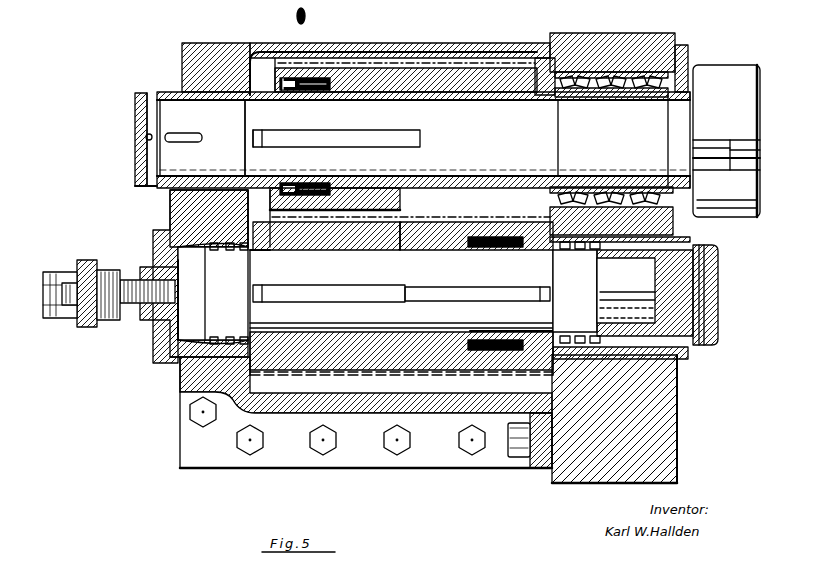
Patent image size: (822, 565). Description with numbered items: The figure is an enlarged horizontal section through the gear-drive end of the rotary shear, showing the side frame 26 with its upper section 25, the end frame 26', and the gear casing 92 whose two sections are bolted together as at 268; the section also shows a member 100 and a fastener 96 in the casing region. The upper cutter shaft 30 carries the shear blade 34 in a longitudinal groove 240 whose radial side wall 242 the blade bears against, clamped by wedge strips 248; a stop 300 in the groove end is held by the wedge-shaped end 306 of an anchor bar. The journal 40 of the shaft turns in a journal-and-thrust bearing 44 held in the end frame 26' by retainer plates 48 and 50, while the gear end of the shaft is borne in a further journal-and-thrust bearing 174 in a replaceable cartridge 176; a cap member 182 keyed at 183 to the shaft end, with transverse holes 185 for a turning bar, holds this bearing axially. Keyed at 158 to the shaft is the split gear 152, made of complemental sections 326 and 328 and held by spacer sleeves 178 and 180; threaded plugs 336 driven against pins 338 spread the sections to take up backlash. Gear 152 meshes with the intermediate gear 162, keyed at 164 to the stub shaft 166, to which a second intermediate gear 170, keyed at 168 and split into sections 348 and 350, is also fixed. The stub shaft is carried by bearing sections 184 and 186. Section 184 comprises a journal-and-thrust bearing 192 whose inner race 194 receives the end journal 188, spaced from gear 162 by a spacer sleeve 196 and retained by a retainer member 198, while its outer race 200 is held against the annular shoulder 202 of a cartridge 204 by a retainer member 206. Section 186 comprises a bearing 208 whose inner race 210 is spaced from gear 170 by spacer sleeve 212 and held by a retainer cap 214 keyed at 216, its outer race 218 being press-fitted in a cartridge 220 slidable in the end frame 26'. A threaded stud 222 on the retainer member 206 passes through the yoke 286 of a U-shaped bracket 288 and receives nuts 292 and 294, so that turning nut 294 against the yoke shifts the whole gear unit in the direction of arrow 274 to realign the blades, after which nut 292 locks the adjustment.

The gear section 328 is at (286, 78).
The stub shaft 166 is at (300, 55).
The gear 152 is at (402, 68).
The end frame 26' is at (631, 40).
The retainer plate 50 is at (688, 60).
The upper cutter shaft 30 is at (740, 64).
The sleeve or cartridge 176 is at (185, 85).
The spacer sleeve 180 is at (262, 90).
The gear section 326 is at (398, 72).
The spacer sleeve 178 is at (470, 92).
The retainer plate 48 is at (535, 72).
The side wall 242 is at (740, 140).
The stop 300 is at (712, 150).
The shear blade 34 is at (748, 145).
The transverse holes 185 is at (138, 133).
The key 183 is at (190, 130).
The journal-and-thrust bearing 174 is at (236, 101).
The threaded plugs 336 is at (299, 136).
The pins 338 is at (318, 92).
The key 158 is at (352, 140).
The journal 40 is at (616, 144).
The journal-and-thrust bearing 44 is at (598, 96).
The cap member 182 is at (135, 180).
The wedge-shaped end 306 is at (708, 172).
The longitudinal groove 240 is at (728, 172).
The wedge strips 248 is at (750, 168).
The sleeve or cartridge 204 is at (185, 232).
The outer race 200 is at (250, 226).
The retainer member 206 is at (160, 250).
The spacer sleeve 196 is at (266, 246).
The gear section 348 is at (418, 235).
The intermediate gear 170 is at (458, 215).
The gear section 350 is at (510, 230).
The bearing section 186 is at (690, 246).
The yoke 286 is at (80, 268).
The threaded stud 222 is at (128, 288).
The nut 292 is at (48, 284).
The journal-and-thrust bearing 192 is at (214, 252).
The inner race 194 is at (244, 252).
The annular shoulder 202 is at (272, 254).
The key 164 is at (350, 298).
The key 168 is at (480, 298).
The journal-and-thrust bearing 208 is at (570, 256).
The inner race 210 is at (590, 250).
The slot 100 is at (598, 292).
The retainer cap 214 is at (722, 290).
The end journal 188 is at (242, 297).
The arrow 274 is at (352, 314).
The outer race 218 is at (580, 336).
The key 216 is at (630, 300).
The nut 294 is at (100, 318).
The U-shaped bracket 288 is at (108, 320).
The retainer member 198 is at (172, 312).
The bearing section 184 is at (170, 375).
The gear casing 92 is at (180, 420).
The intermediate gear 162 is at (322, 392).
The spacer sleeve 212 is at (545, 365).
The cartridge 220 is at (690, 353).
The side frame section 25 is at (660, 383).
The side frame 26 is at (697, 419).
The bolts 268 is at (318, 442).
The bolt 96 is at (517, 448).